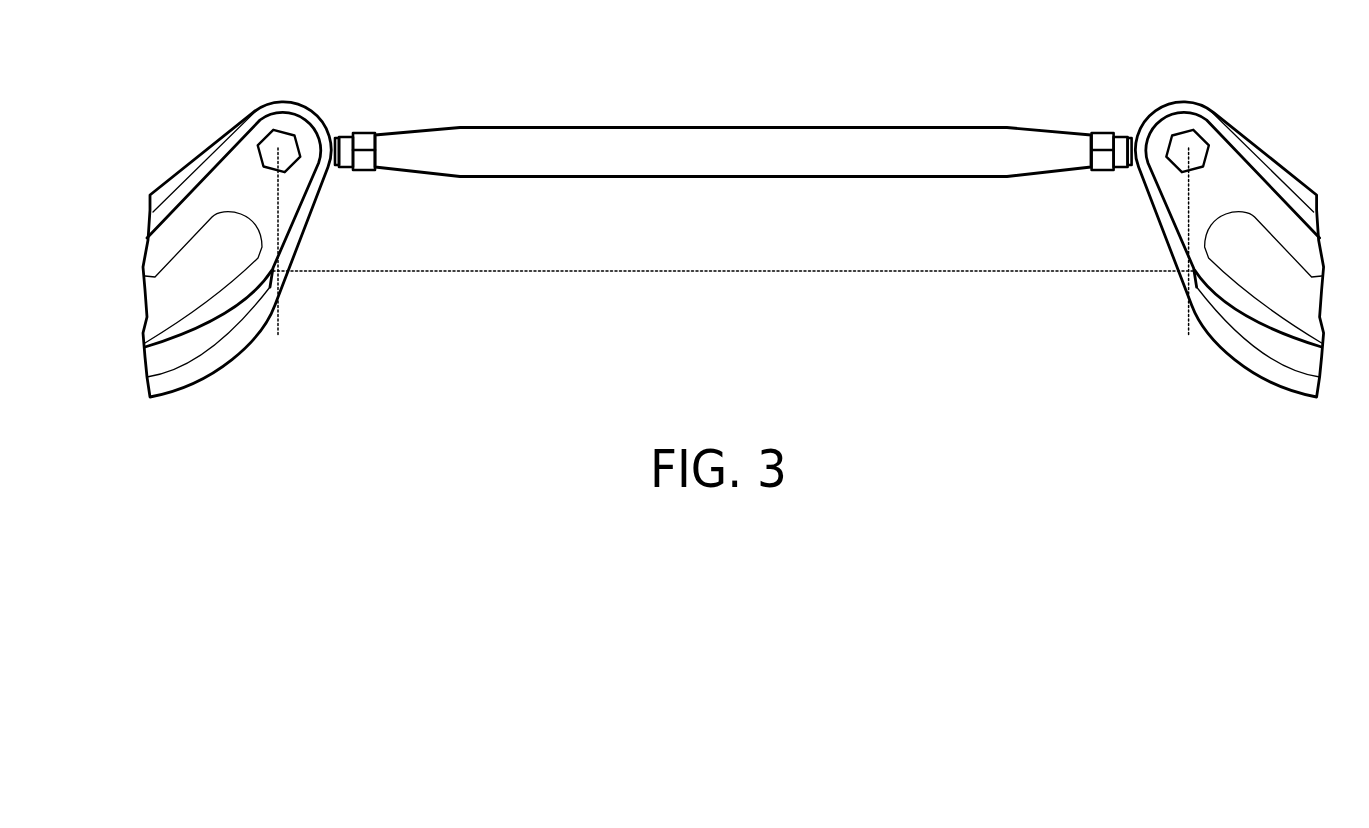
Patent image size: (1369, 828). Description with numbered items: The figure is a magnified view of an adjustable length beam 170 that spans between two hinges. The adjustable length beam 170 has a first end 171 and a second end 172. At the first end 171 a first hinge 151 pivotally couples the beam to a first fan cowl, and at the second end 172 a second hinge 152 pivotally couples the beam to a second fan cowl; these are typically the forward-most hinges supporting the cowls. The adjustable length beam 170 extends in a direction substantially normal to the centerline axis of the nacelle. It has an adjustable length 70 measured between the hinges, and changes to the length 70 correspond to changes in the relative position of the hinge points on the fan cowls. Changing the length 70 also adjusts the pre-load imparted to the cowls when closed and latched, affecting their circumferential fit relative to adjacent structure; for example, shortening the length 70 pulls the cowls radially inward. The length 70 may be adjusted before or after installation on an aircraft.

The first hinge 151 is at (263, 124).
The second hinge 152 is at (1205, 122).
The adjustable length beam 170 is at (755, 152).
The first end 171 is at (348, 191).
The second end 172 is at (1117, 187).
The adjustable length 70 is at (859, 272).